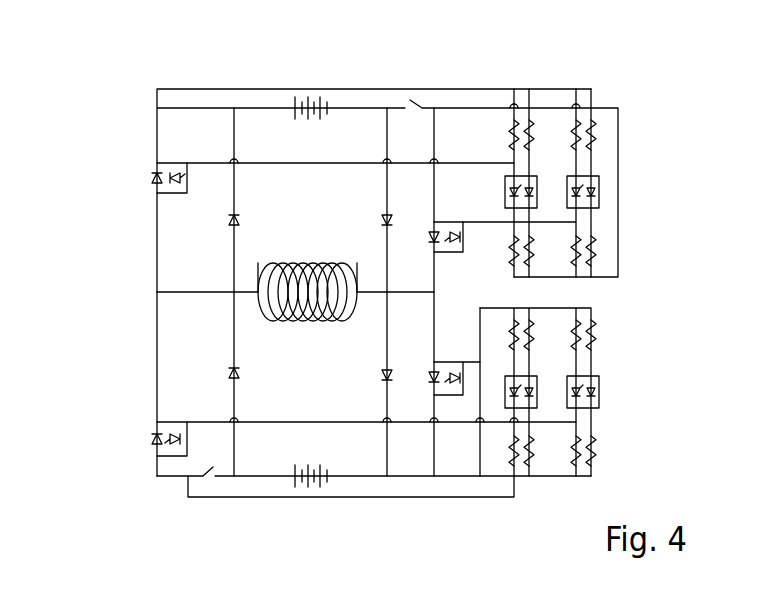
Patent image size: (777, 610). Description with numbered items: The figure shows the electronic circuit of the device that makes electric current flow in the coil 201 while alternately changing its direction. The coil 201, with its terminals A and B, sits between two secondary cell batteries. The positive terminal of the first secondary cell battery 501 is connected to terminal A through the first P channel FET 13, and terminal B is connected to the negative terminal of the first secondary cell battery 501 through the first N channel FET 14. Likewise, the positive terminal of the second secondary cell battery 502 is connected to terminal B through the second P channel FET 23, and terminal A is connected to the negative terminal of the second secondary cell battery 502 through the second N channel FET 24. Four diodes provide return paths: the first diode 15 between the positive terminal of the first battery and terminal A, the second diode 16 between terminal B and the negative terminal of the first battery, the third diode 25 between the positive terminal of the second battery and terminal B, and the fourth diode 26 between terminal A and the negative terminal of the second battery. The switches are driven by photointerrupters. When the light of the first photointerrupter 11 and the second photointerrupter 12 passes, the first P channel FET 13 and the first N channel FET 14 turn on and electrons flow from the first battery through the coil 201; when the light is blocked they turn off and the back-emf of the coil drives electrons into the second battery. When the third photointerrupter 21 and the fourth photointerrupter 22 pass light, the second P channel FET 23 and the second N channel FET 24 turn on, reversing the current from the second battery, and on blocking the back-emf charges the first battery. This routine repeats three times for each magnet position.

The secondary cell battery-1 501 is at (311, 98).
The secondary cell battery-2 502 is at (312, 483).
The P channel FET-1 13 is at (148, 165).
The N channel FET-2 24 is at (150, 437).
The first diode 15 is at (227, 220).
The fourth diode 26 is at (222, 373).
The second diode 16 is at (378, 208).
The third diode 25 is at (382, 380).
The coil 201 is at (257, 277).
The N channel FET-1 14 is at (472, 250).
The P channel FET-2 23 is at (447, 397).
The photointerrupter-1 11 is at (543, 177).
The photointerrupter-2 12 is at (602, 182).
The photointerrupter-3 21 is at (535, 373).
The photointerrupter-4 22 is at (605, 387).